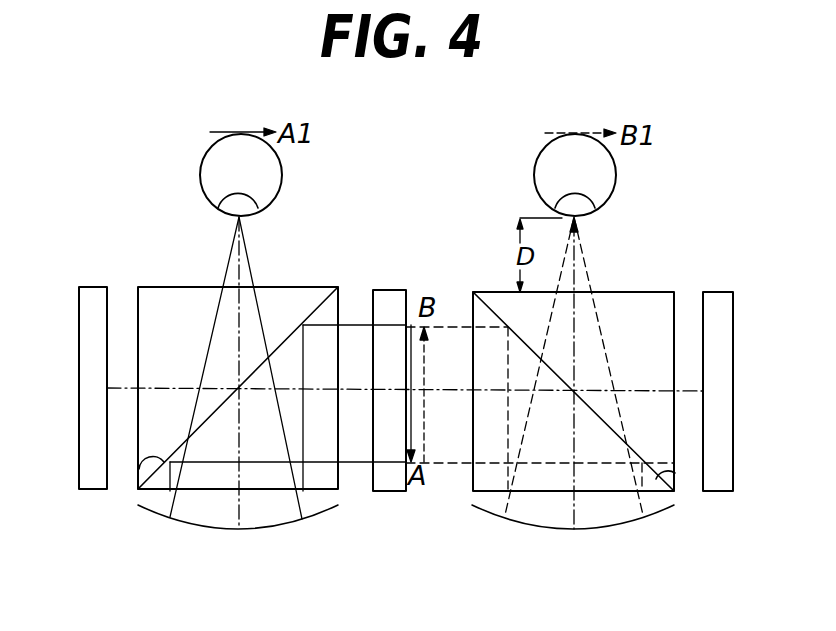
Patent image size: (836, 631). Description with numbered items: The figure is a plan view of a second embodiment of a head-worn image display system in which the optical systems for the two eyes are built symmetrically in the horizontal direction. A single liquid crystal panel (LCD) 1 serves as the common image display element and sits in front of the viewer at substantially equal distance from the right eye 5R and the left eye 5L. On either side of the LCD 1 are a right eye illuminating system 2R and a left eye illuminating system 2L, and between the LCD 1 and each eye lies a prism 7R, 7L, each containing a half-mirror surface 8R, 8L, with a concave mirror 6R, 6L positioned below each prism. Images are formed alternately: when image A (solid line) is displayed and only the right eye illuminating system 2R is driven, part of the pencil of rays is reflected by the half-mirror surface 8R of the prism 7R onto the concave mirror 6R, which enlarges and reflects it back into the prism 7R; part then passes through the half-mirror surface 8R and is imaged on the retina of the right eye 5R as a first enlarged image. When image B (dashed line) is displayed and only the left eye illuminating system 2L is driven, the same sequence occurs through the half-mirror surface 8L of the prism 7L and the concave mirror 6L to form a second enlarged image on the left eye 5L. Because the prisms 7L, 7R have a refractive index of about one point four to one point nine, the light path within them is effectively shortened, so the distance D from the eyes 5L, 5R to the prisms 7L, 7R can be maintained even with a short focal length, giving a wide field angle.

The liquid crystal panel (LCD) 1 is at (390, 491).
The left eye illuminating system 2L is at (93, 287).
The right eye illuminating system 2R is at (725, 292).
The right eye 5R is at (200, 180).
The left eye 5L is at (616, 175).
The concave mirror 6R is at (273, 528).
The concave mirror 6L is at (530, 525).
The prism 7R is at (168, 287).
The prism 7L is at (645, 292).
The half-mirror surface 8R is at (139, 468).
The half-mirror surface 8L is at (675, 473).